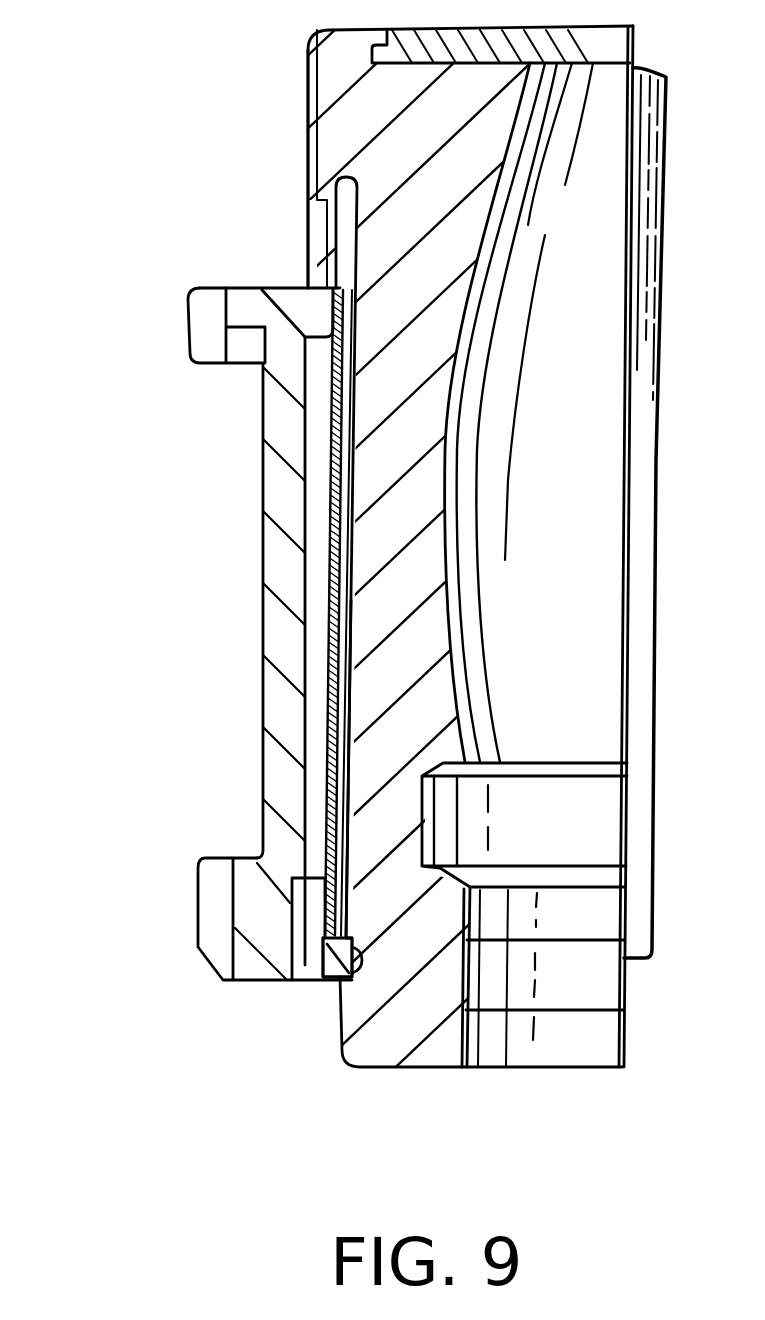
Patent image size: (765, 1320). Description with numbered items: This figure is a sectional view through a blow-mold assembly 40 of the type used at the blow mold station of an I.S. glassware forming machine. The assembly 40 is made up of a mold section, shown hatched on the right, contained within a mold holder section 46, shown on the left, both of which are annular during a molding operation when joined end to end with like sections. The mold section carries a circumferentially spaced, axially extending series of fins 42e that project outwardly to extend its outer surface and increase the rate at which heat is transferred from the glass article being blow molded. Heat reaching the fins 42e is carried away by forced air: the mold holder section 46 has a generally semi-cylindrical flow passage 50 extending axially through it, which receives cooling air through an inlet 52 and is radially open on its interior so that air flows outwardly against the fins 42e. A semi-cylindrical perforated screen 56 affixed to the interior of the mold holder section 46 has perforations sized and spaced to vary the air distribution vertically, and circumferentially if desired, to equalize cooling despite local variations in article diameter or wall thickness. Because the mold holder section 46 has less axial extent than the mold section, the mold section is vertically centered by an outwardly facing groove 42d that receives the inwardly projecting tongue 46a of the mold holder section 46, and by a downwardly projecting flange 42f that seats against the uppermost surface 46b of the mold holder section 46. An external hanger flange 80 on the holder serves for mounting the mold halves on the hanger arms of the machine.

The mold assembly 40 is at (240, 116).
The outwardly facing groove 42d is at (350, 980).
The fins 42e is at (343, 800).
The downwardly projecting flange 42f is at (307, 223).
The mold holder section 46 is at (263, 562).
The tongue 46a is at (338, 985).
The uppermost surface 46b is at (283, 288).
The flow passage 50 is at (320, 508).
The inlet 52 is at (303, 965).
The perforated screen 56 is at (327, 686).
The external hanger flange 80 is at (203, 333).